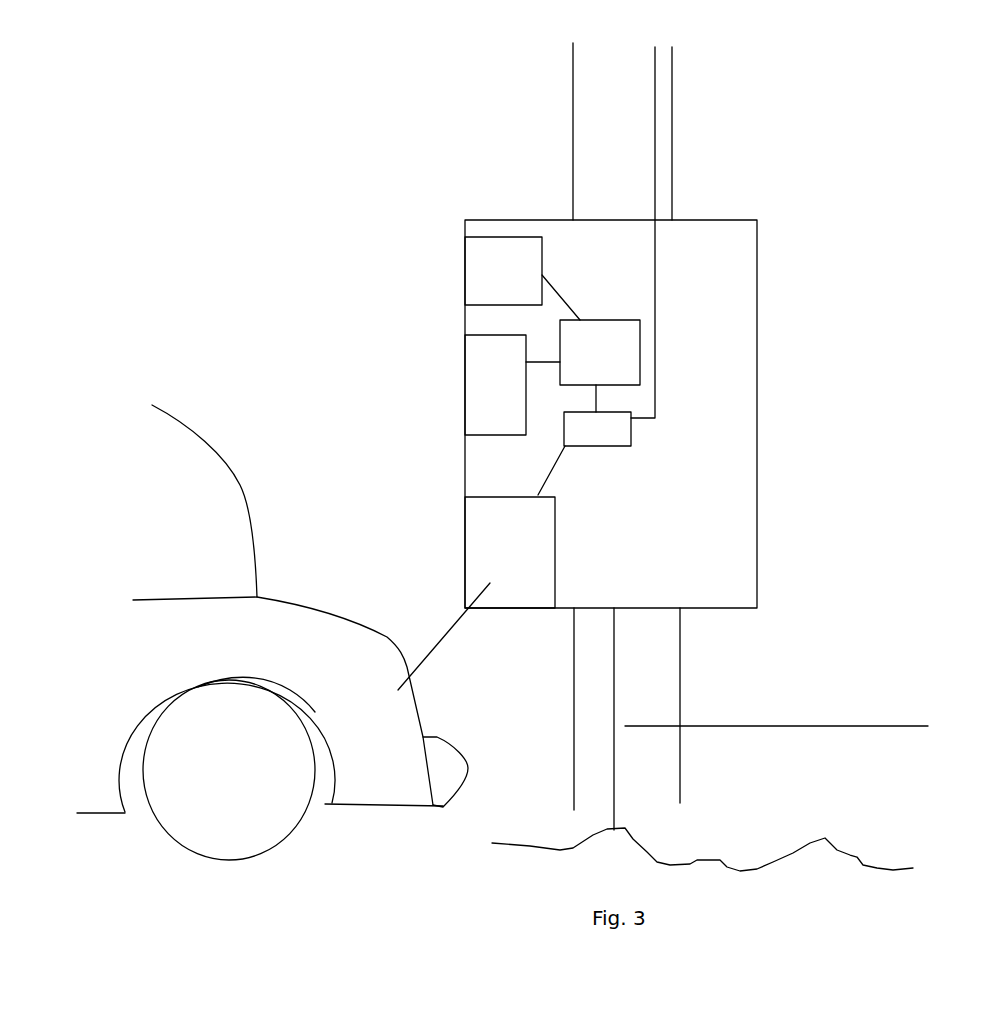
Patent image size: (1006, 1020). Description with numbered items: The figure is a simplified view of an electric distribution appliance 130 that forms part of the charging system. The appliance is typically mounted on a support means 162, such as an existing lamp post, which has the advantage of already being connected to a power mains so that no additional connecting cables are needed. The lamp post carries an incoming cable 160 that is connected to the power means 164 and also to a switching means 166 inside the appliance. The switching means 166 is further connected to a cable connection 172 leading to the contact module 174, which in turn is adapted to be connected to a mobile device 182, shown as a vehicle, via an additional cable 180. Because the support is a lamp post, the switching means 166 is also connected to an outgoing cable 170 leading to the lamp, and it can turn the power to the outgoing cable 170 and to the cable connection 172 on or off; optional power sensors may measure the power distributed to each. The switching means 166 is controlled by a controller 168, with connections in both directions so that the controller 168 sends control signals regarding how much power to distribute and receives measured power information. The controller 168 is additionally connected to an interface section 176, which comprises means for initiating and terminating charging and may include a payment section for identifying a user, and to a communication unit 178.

The electric distribution appliance 130 is at (772, 387).
The incoming cable 160 is at (797, 726).
The support means 162 is at (682, 172).
The power means 164 is at (867, 848).
The switching means 166 is at (597, 429).
The controller 168 is at (600, 366).
The outgoing cable 170 is at (667, 124).
The cable connection 172 is at (560, 479).
The contact module 174 is at (510, 552).
The interface section 176 is at (512, 385).
The communication unit 178 is at (522, 278).
The additional cable 180 is at (428, 642).
The mobile device 182 is at (272, 632).